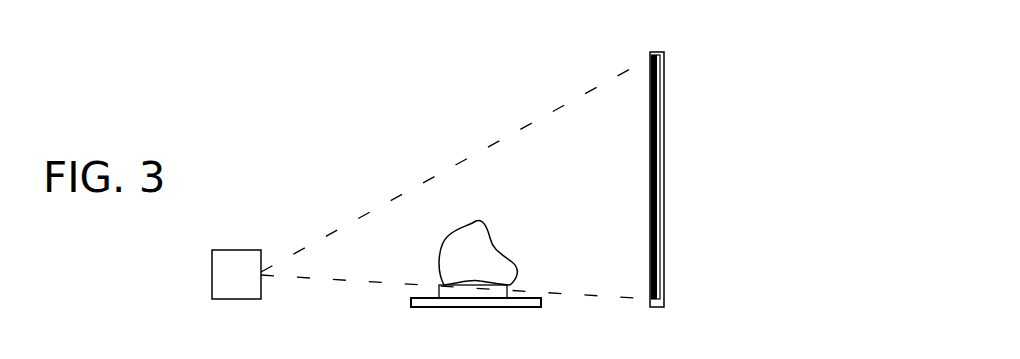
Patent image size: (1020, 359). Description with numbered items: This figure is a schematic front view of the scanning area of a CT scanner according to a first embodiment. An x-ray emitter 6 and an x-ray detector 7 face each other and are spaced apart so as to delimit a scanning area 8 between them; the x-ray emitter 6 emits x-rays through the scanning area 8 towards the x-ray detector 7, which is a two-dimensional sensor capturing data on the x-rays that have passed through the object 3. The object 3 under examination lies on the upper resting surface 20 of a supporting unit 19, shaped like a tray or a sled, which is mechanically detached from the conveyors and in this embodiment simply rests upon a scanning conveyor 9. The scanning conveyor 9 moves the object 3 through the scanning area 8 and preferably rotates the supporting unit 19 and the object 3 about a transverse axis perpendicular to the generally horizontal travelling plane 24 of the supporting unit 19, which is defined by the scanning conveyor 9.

The object 3 is at (463, 247).
The x-ray emitter 6 is at (220, 287).
The x-ray detector 7 is at (658, 178).
The scanning area 8 is at (497, 113).
The scanning conveyor 9 is at (423, 317).
The supporting unit 19 is at (493, 292).
The upper resting surface 20 is at (490, 280).
The travelling plane 24 is at (422, 292).